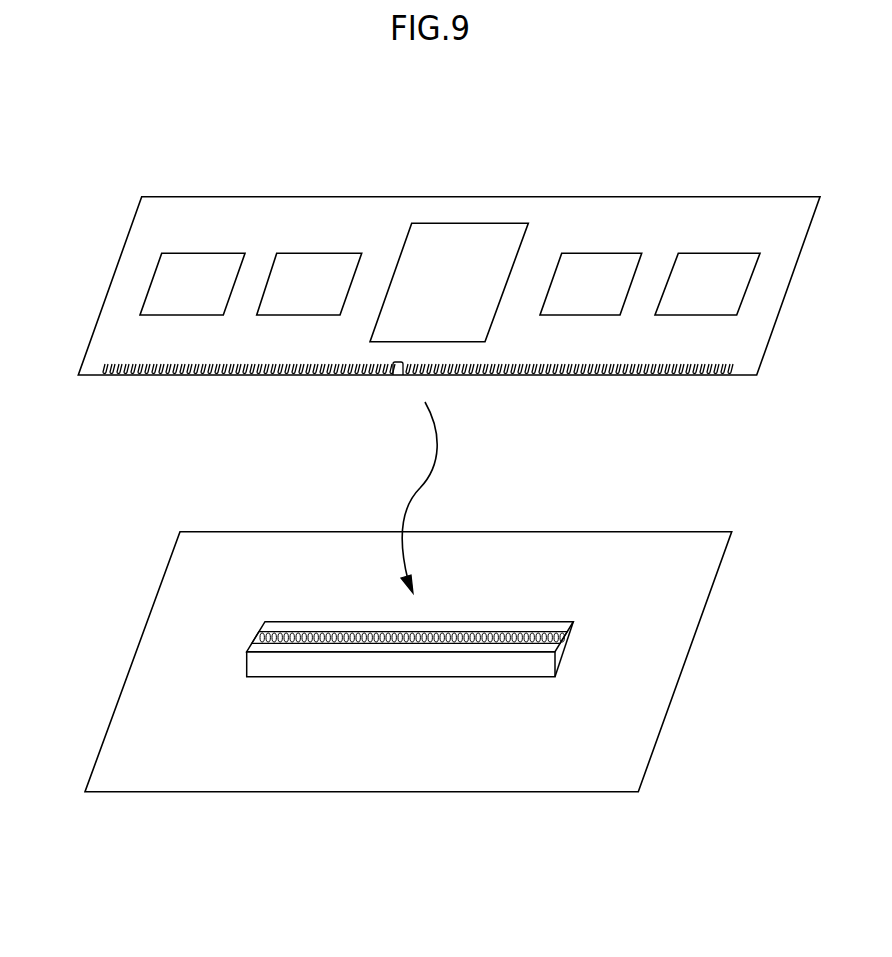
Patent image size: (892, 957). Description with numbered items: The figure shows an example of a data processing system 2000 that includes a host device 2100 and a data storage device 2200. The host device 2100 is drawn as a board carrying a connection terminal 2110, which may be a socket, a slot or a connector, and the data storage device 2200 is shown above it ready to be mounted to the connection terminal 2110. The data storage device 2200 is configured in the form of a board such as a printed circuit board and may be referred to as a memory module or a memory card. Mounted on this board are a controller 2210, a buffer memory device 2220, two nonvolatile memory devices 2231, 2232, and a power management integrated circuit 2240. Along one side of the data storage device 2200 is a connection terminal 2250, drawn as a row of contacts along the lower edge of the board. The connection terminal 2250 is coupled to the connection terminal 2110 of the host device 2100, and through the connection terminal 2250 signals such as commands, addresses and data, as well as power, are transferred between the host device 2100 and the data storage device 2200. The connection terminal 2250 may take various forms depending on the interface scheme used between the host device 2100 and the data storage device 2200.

The data processing system 2000 is at (121, 157).
The data storage device 2200 is at (449, 310).
The controller 2210 is at (449, 282).
The buffer memory device 2220 is at (309, 284).
The nonvolatile memory device 2231 is at (591, 284).
The nonvolatile memory device 2232 is at (707, 284).
The power management integrated circuit 2240 is at (192, 284).
The connection terminal 2250 is at (122, 376).
The host device 2100 is at (408, 662).
The connection terminal 2110 is at (598, 617).